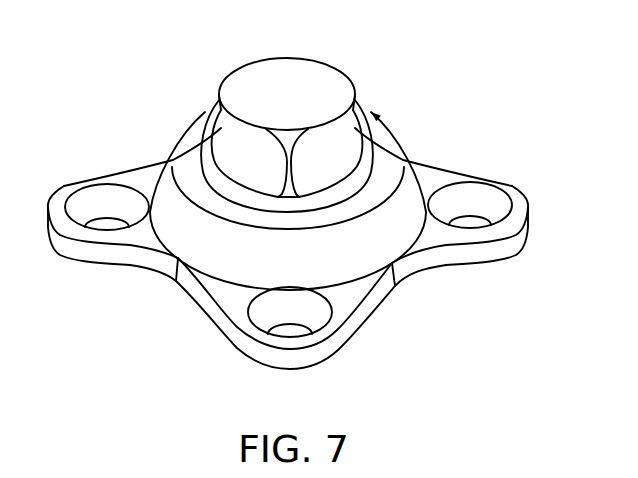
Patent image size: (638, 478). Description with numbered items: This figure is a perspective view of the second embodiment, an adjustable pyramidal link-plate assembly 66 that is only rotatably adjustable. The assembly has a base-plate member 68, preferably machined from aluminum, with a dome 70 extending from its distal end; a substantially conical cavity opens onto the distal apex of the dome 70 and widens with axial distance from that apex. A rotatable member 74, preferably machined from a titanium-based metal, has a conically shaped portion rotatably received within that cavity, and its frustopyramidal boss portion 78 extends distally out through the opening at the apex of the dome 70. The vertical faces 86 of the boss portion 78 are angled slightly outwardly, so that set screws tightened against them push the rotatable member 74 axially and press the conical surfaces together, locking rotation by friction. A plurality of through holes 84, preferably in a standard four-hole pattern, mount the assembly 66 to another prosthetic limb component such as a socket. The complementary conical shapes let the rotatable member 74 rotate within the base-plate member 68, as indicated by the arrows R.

The adjustable pyramidal link-plate assembly 66 is at (472, 117).
The base-plate member 68 is at (433, 240).
The dome 70 is at (199, 245).
The rotatable member 74 is at (327, 77).
The frustopyramidal boss portion 78 is at (257, 170).
The through holes 84 is at (87, 202).
The vertical faces 86 is at (248, 138).